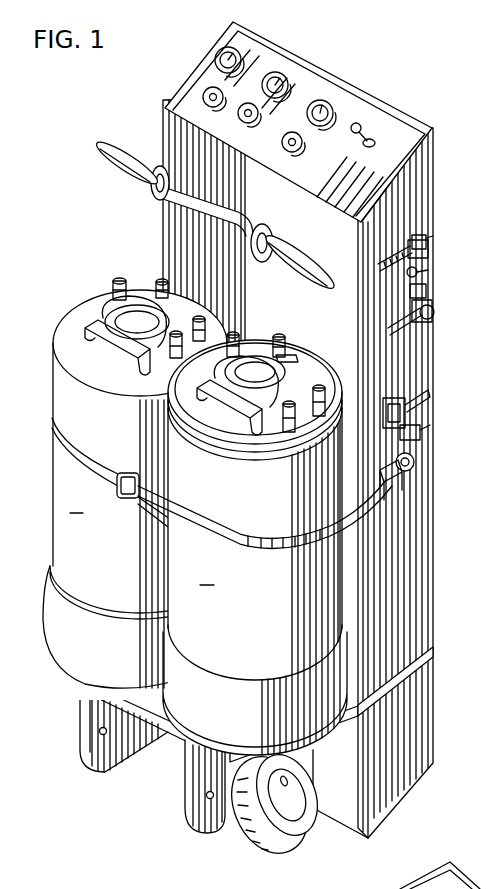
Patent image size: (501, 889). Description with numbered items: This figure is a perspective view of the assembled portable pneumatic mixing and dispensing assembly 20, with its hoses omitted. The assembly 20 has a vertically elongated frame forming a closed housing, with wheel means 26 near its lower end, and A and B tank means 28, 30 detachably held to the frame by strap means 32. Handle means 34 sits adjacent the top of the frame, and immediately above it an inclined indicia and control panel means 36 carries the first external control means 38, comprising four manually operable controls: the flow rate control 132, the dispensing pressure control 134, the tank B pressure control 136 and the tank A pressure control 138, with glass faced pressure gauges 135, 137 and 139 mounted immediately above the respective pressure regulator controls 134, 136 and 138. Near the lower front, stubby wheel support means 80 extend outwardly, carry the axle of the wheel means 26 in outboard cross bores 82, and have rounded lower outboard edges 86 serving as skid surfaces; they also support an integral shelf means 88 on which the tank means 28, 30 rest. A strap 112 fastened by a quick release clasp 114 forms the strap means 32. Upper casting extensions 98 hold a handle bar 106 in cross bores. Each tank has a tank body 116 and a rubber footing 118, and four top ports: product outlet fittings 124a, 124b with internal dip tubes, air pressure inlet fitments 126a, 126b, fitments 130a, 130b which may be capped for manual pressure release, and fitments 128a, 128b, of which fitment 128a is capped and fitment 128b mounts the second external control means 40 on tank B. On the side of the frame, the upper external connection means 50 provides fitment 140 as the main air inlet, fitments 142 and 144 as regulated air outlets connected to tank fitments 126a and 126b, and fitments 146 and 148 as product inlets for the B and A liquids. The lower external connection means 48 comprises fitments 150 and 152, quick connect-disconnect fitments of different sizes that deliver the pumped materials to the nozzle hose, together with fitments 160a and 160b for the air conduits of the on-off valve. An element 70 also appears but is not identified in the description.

The assembly 20 is at (265, 494).
The wheel means 26 is at (257, 850).
The A tank means 28 is at (133, 467).
The B tank means 30 is at (255, 523).
The strap means 32 is at (319, 509).
The handle means 34 is at (315, 257).
The indicia and control panel means 36 is at (308, 115).
The first external control means 38 is at (369, 172).
The second external control means 40 is at (296, 345).
The lower external connection means 48 is at (441, 409).
The upper external connection means 50 is at (433, 293).
The coupling 70 is at (409, 875).
The wheel support means 80 is at (265, 747).
The outboard cross through bearing bores 82 is at (104, 736).
The lower outboard edges 86 is at (192, 832).
The shelf means 88 is at (265, 695).
The upper casting extensions 98 is at (192, 168).
The handle bar 106 is at (182, 234).
The strap 112 is at (157, 476).
The quick release attachment clasp 114 is at (124, 472).
The tank bodies 116 is at (250, 668).
The rubber footing 118 is at (372, 662).
The product outlet fitting 124a is at (116, 282).
The product outlet fitting 124b is at (235, 334).
The air pressure inlet fitment 126a is at (160, 281).
The air pressure inlet fitment 126b is at (282, 336).
The fitment 128a is at (206, 318).
The fitment 128b is at (316, 420).
The fitment 130a is at (176, 333).
The fitment 130b is at (283, 437).
The flow rate control 132 is at (369, 128).
The dispensing pressure control 134 is at (305, 146).
The pressure gauge 135 is at (336, 99).
The tank B pressure control 136 is at (251, 126).
The pressure gauge 137 is at (291, 75).
The tank A pressure control 138 is at (202, 87).
The pressure gauge 139 is at (240, 40).
The fitment 140 is at (430, 238).
The fitment 142 is at (427, 256).
The fitment 144 is at (418, 275).
The fitment 146 is at (428, 293).
The fitment 148 is at (434, 316).
The fitment 150 is at (429, 394).
The fitment 152 is at (431, 428).
The quick detachable fitment 160a is at (395, 455).
The fitment 160b is at (383, 472).